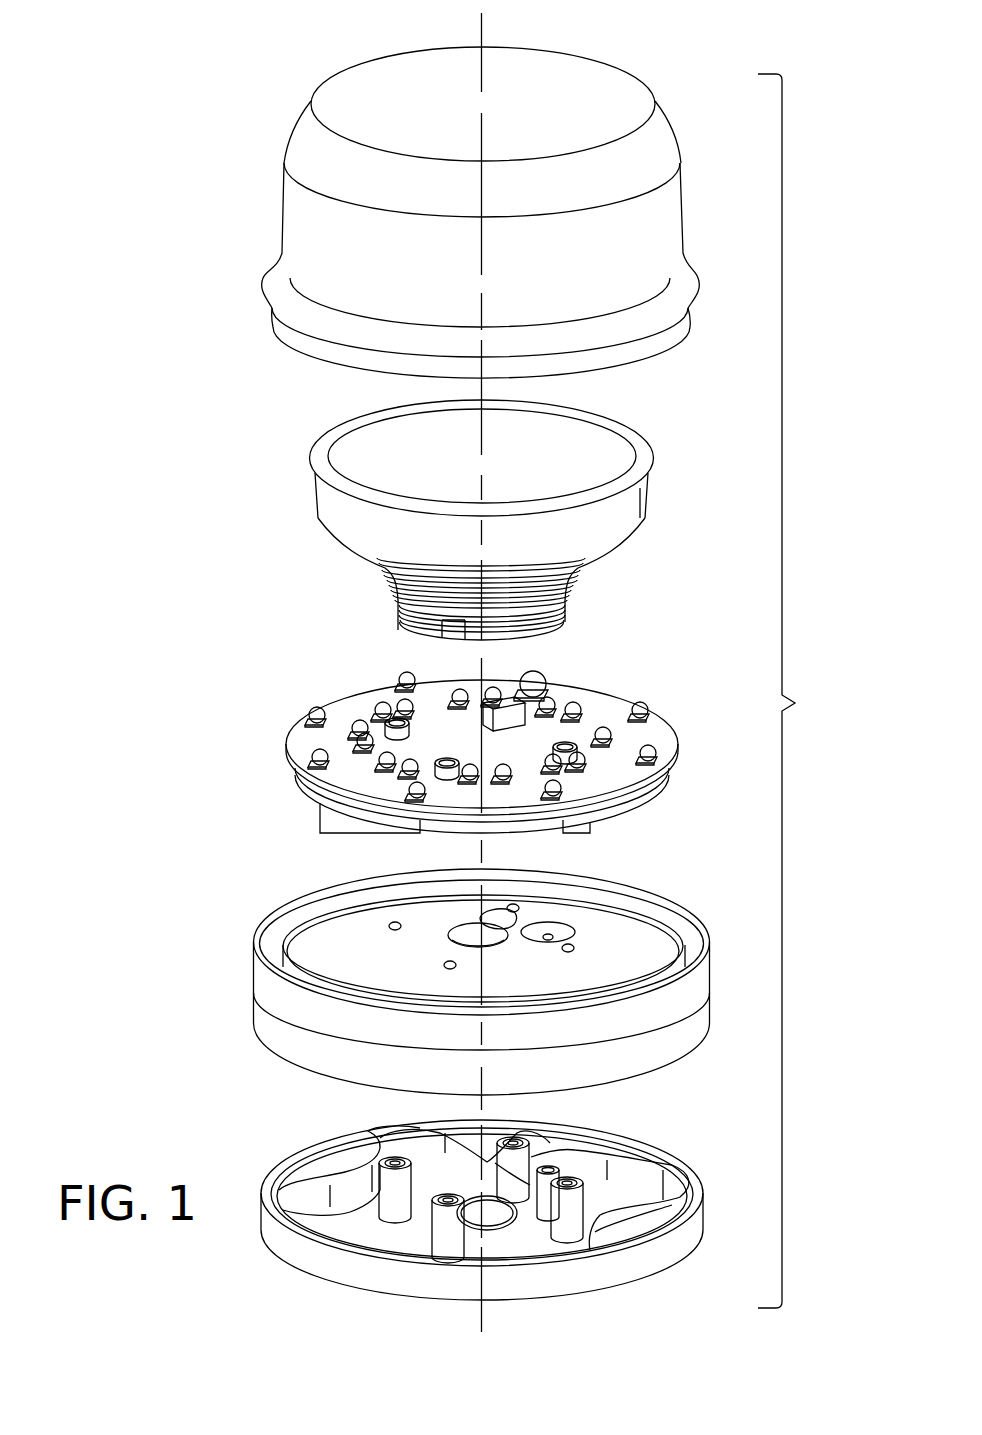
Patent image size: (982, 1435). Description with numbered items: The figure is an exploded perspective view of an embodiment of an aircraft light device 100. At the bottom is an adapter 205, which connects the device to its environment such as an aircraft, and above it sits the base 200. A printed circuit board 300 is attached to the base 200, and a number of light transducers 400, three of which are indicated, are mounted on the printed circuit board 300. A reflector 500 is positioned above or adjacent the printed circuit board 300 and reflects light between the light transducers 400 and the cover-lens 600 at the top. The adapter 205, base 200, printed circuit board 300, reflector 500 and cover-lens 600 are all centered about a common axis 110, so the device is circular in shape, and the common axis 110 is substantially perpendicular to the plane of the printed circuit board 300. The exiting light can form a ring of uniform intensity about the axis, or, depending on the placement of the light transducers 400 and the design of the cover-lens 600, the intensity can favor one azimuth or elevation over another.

The light device 100 is at (803, 691).
The common axis 110 is at (478, 28).
The base 200 is at (270, 975).
The adapter 205 is at (327, 1158).
The printed circuit board 300 is at (303, 745).
The light transducers 400 is at (645, 712).
The reflector 500 is at (333, 503).
The cover-lens 600 is at (293, 245).